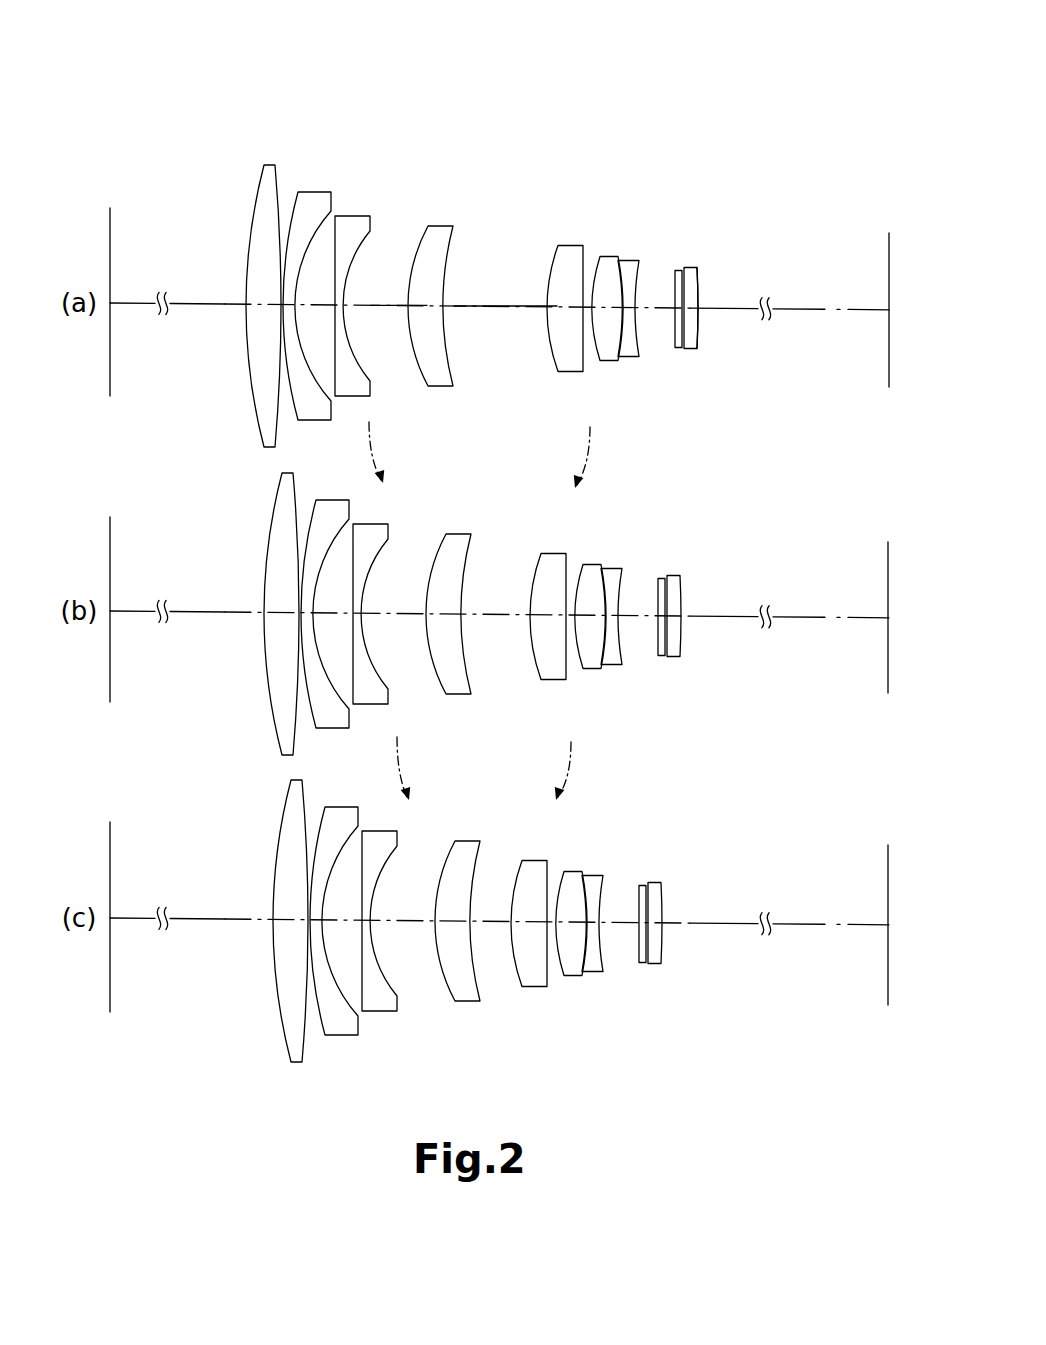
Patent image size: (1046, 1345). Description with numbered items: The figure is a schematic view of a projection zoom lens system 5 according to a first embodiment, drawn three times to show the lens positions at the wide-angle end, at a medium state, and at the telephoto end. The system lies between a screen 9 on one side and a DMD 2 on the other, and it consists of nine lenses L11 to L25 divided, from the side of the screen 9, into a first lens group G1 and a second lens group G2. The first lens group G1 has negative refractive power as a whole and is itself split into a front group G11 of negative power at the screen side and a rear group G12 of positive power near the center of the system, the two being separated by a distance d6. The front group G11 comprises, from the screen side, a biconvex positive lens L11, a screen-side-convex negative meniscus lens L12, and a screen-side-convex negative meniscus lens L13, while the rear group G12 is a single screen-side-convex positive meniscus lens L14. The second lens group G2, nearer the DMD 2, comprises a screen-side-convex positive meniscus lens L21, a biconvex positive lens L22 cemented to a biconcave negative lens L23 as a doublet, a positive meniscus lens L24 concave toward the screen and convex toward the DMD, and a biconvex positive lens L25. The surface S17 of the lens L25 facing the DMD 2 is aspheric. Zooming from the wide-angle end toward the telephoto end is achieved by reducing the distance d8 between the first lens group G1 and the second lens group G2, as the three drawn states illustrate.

The DMD 2 is at (889, 258).
The projection zoom lens system 5 is at (228, 146).
The screen 9 is at (111, 256).
The first lens group G1 is at (288, 51).
The front group G11 is at (252, 98).
The rear group G12 is at (417, 100).
The second lens group G2 is at (795, 123).
The biconvex positive lens L11 is at (268, 165).
The screen side convex negative meniscus lens L12 is at (313, 190).
The screen side convex negative meniscus lens L13 is at (357, 215).
The screen side convex positive meniscus lens L14 is at (443, 225).
The screen side convex positive meniscus lens L21 is at (572, 247).
The biconvex positive lens L22 is at (612, 257).
The biconcave negative lens L23 is at (632, 260).
The screen side concave positive meniscus lens L24 is at (680, 270).
The biconvex positive lens L25 is at (688, 266).
The distance d6 is at (383, 304).
The distance d8 is at (505, 307).
The surface S17 is at (698, 337).